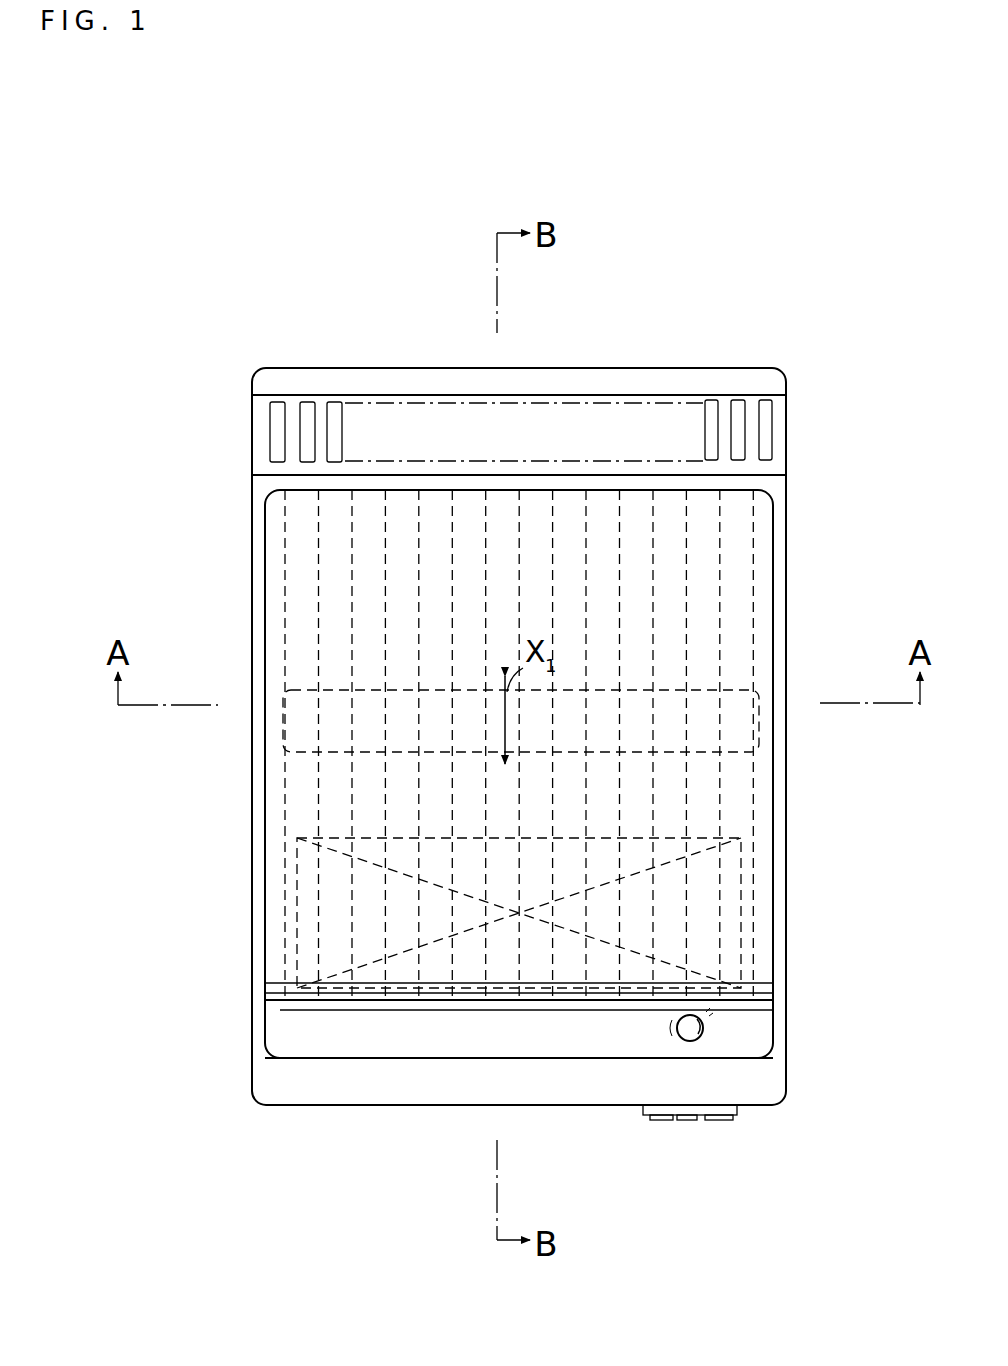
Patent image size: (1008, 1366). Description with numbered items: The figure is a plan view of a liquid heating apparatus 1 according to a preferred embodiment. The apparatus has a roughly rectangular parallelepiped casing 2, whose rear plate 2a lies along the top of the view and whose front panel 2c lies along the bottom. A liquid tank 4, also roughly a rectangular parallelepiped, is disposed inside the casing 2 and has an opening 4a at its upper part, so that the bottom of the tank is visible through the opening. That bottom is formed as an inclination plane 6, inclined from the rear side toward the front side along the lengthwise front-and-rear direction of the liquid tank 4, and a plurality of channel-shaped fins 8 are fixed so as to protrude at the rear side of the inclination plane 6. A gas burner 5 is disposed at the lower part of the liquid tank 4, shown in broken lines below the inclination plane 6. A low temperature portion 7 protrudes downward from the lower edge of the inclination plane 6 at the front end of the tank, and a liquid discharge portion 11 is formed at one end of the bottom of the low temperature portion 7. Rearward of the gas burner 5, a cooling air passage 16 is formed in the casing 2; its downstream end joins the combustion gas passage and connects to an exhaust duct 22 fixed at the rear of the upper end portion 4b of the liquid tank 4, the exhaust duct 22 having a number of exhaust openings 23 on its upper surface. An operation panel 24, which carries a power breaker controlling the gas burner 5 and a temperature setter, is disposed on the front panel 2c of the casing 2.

The liquid heating apparatus 1 is at (737, 272).
The casing 2 is at (250, 478).
The rear plate of the casing 2a is at (355, 368).
The front panel of the casing 2c is at (385, 1105).
The liquid tank 4 is at (265, 800).
The opening 4a is at (773, 586).
The upper end portion of the liquid tank 4b is at (780, 483).
The gas burner 5 is at (745, 877).
The inclination plane 6 is at (310, 570).
The low temperature portion 7 is at (290, 1034).
The fins 8 is at (350, 652).
The liquid discharge portion 11 is at (703, 1022).
The cooling air passage 16 is at (765, 740).
The exhaust duct 22 is at (580, 368).
The exhaust openings 23 is at (712, 403).
The operation panel 24 is at (700, 1120).